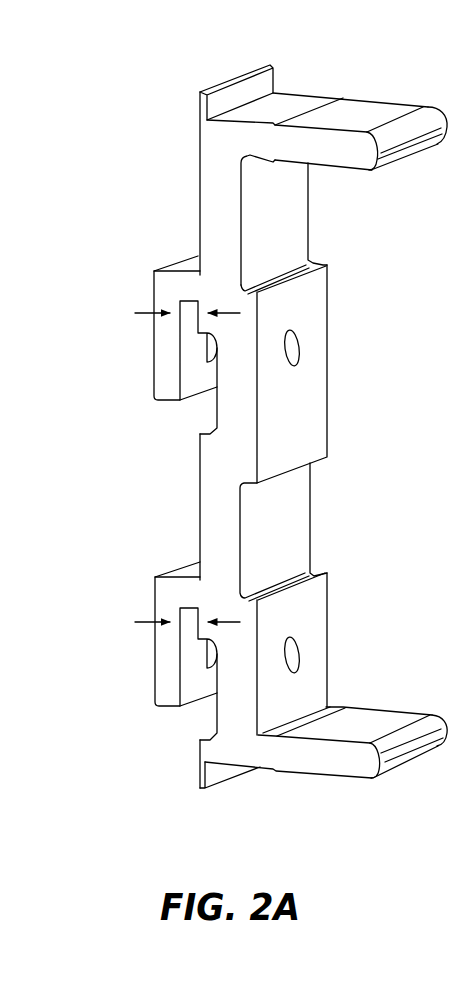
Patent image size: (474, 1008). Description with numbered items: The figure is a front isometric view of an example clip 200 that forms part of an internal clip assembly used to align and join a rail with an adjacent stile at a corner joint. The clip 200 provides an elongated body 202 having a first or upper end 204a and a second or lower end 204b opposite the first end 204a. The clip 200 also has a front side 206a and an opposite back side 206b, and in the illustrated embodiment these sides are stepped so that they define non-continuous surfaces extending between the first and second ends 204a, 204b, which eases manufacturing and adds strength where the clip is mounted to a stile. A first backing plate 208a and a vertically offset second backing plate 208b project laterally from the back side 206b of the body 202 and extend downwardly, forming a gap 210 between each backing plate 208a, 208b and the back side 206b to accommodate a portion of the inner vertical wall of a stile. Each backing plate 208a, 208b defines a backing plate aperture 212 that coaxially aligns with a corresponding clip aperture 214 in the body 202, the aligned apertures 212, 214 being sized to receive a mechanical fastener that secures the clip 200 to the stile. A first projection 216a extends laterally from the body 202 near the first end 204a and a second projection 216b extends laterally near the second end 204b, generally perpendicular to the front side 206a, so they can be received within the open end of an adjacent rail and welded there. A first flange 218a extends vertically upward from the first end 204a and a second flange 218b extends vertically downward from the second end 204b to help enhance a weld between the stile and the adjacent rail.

The clip 200 is at (128, 122).
The elongated body 202 is at (191, 213).
The first end 204a is at (287, 71).
The second end 204b is at (190, 790).
The front side 206a is at (292, 227).
The back side 206b is at (200, 507).
The first backing plate 208a is at (155, 370).
The second backing plate 208b is at (155, 676).
The gap 210 is at (147, 312).
The backing plate aperture 212 is at (210, 345).
The clip aperture 214 is at (292, 348).
The first projection 216a is at (398, 107).
The second projection 216b is at (380, 720).
The first flange 218a is at (222, 85).
The second flange 218b is at (207, 785).